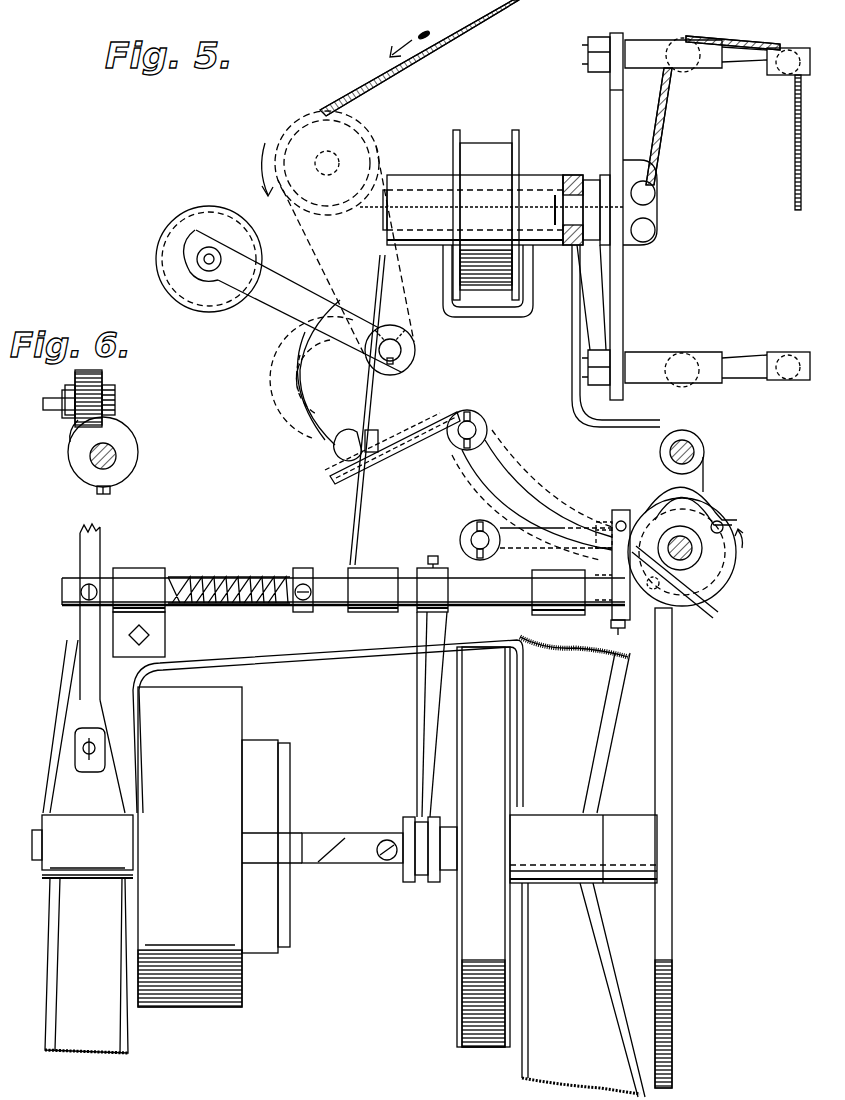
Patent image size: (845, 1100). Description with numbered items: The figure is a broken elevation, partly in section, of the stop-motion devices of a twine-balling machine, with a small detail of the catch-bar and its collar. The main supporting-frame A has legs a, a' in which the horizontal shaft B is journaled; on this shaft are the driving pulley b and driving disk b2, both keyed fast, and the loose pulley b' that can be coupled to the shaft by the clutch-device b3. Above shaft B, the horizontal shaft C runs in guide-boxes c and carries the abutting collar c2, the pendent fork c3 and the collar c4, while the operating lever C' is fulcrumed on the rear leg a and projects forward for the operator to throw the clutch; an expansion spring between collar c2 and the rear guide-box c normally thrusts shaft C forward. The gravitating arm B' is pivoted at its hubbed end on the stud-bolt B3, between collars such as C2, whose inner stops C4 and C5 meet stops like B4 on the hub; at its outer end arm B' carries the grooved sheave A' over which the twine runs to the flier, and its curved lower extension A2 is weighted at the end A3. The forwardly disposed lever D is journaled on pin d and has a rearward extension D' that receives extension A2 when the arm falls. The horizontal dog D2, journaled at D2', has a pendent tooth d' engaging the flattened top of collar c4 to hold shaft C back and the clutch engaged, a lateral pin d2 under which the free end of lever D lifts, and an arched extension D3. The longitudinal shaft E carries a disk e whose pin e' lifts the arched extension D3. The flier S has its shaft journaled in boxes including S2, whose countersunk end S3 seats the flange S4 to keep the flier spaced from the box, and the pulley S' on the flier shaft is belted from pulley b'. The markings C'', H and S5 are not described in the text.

In FIG. 5, the main supporting-frame A is at (471, 423).
In FIG. 5, the grooved pulley or sheave A' is at (190, 259).
In FIG. 5, the lower extension or curved branch A2 is at (320, 427).
In FIG. 5, the weighted end A3 is at (368, 440).
In FIG. 5, the horizontal shaft B is at (68, 846).
In FIG. 5, the gravitating lever or arm B' is at (298, 301).
In FIG. 5, the short shaft or stud-bolt B3 is at (393, 350).
In FIG. 5, the stop B4 is at (338, 290).
In FIG. 5, the horizontal shaft C is at (327, 588).
In FIG. 6, the horizontal shaft C is at (115, 475).
In FIG. 5, the reciprocating or operating lever C' is at (229, 575).
In FIG. 5, the arm C'' is at (70, 668).
In FIG. 5, the collar C2 is at (400, 368).
In FIG. 5, the stop or lug C4 is at (367, 348).
In FIG. 5, the stop or lug C5 is at (405, 337).
In FIG. 5, the guide-boxes c is at (135, 580).
In FIG. 5, the abutting collar c2 is at (303, 570).
In FIG. 5, the pendent fork c3 is at (420, 703).
In FIG. 6, the collar or projection c4 is at (132, 452).
In FIG. 5, the forwardly disposed lever or arm D is at (532, 495).
In FIG. 5, the rearward extension or short arm D' is at (392, 454).
In FIG. 5, the horizontal dog or hook D2 is at (602, 509).
In FIG. 6, the horizontal dog or hook D2 is at (116, 397).
In FIG. 5, the journal of dog D2' is at (510, 539).
In FIG. 5, the arched-extension D3 is at (710, 508).
In FIG. 6, the arched-extension D3 is at (102, 377).
In FIG. 5, the pin d is at (483, 430).
In FIG. 5, the pendent tooth or lug d' is at (685, 589).
In FIG. 6, the pendent tooth or lug d' is at (49, 441).
In FIG. 5, the lateral pin d2 is at (623, 523).
In FIG. 6, the lateral pin d2 is at (43, 406).
In FIG. 5, the longitudinal shaft E is at (697, 560).
In FIG. 5, the disk e is at (685, 552).
In FIG. 5, the pin e' is at (706, 569).
In FIG. 5, the hub H is at (692, 444).
In FIG. 5, the flier S is at (595, 195).
In FIG. 5, the pulley S' is at (468, 223).
In FIG. 5, the journal box S2 is at (541, 182).
In FIG. 5, the shouldered or countersunk end S3 is at (573, 178).
In FIG. 5, the shoulder or flange S4 is at (565, 178).
In FIG. 5, the spindle plate S5 is at (618, 103).
In FIG. 5, the rear frame leg a is at (86, 965).
In FIG. 5, the frame leg a' is at (583, 956).
In FIG. 5, the driving pulley b is at (220, 847).
In FIG. 5, the driving pulley b' is at (483, 847).
In FIG. 5, the driving disk b2 is at (667, 807).
In FIG. 5, the clutch-device b3 is at (350, 833).